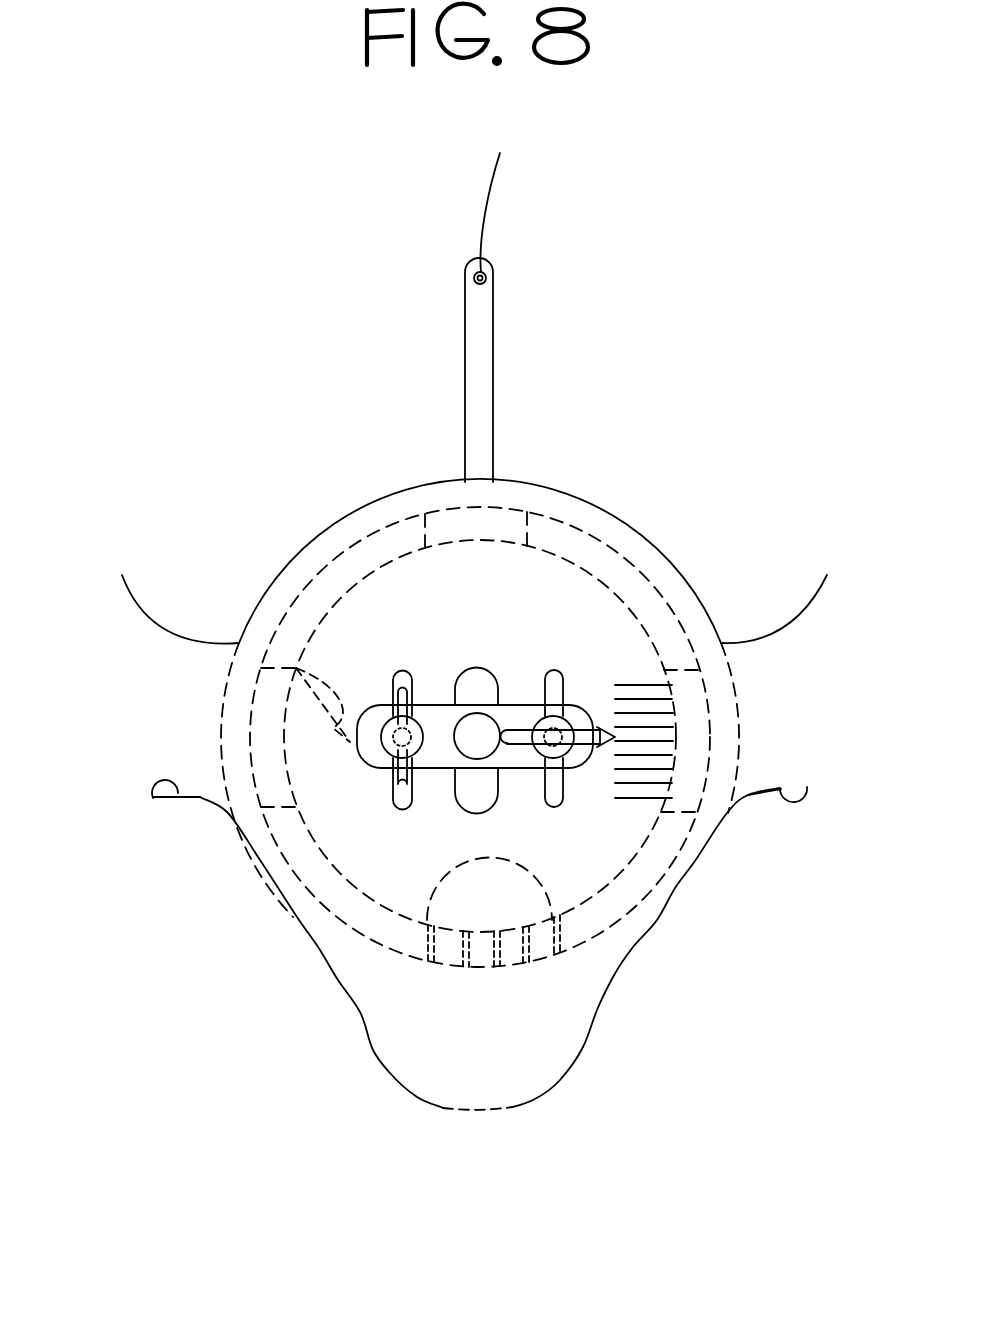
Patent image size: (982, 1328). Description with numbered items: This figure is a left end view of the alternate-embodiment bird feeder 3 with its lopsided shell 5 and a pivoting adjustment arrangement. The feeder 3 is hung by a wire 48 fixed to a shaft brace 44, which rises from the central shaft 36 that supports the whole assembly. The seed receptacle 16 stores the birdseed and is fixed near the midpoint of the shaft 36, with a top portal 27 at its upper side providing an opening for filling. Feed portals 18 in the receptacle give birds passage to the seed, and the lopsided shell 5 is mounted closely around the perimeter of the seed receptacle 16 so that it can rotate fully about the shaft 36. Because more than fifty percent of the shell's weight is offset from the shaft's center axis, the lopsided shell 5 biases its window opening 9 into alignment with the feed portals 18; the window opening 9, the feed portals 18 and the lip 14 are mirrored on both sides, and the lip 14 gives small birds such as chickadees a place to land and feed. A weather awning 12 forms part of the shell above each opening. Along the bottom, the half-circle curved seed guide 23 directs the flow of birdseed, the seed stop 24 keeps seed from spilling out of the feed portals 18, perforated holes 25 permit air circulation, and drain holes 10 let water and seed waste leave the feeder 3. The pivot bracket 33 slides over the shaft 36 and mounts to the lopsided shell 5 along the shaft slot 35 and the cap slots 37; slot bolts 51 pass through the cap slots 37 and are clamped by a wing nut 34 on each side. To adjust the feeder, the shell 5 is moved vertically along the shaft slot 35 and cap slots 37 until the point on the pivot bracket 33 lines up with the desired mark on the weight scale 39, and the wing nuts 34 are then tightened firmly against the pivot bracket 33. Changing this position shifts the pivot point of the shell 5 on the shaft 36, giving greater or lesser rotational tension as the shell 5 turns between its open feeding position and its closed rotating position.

The feeder 3 is at (290, 503).
The lopsided shell 5 is at (576, 498).
The window opening 9 is at (220, 773).
The drain holes 10 is at (443, 1115).
The weather awning 12 is at (150, 610).
The lip 14 is at (200, 798).
The seed receptacle 16 is at (650, 530).
The feed portals 18 is at (226, 693).
The curved seed guide 23 is at (437, 882).
The seed stop 24 is at (680, 573).
The perforated holes 25 is at (588, 930).
The top portal 27 is at (453, 505).
The pivot bracket 33 is at (510, 705).
The wing nut 34 is at (381, 745).
The shaft slot 35 is at (455, 800).
The shaft 36 is at (455, 717).
The cap slots 37 is at (392, 683).
The weight scale 39 is at (633, 800).
The shaft braces 44 is at (493, 342).
The wires 48 is at (483, 210).
The slot bolts 51 is at (395, 746).